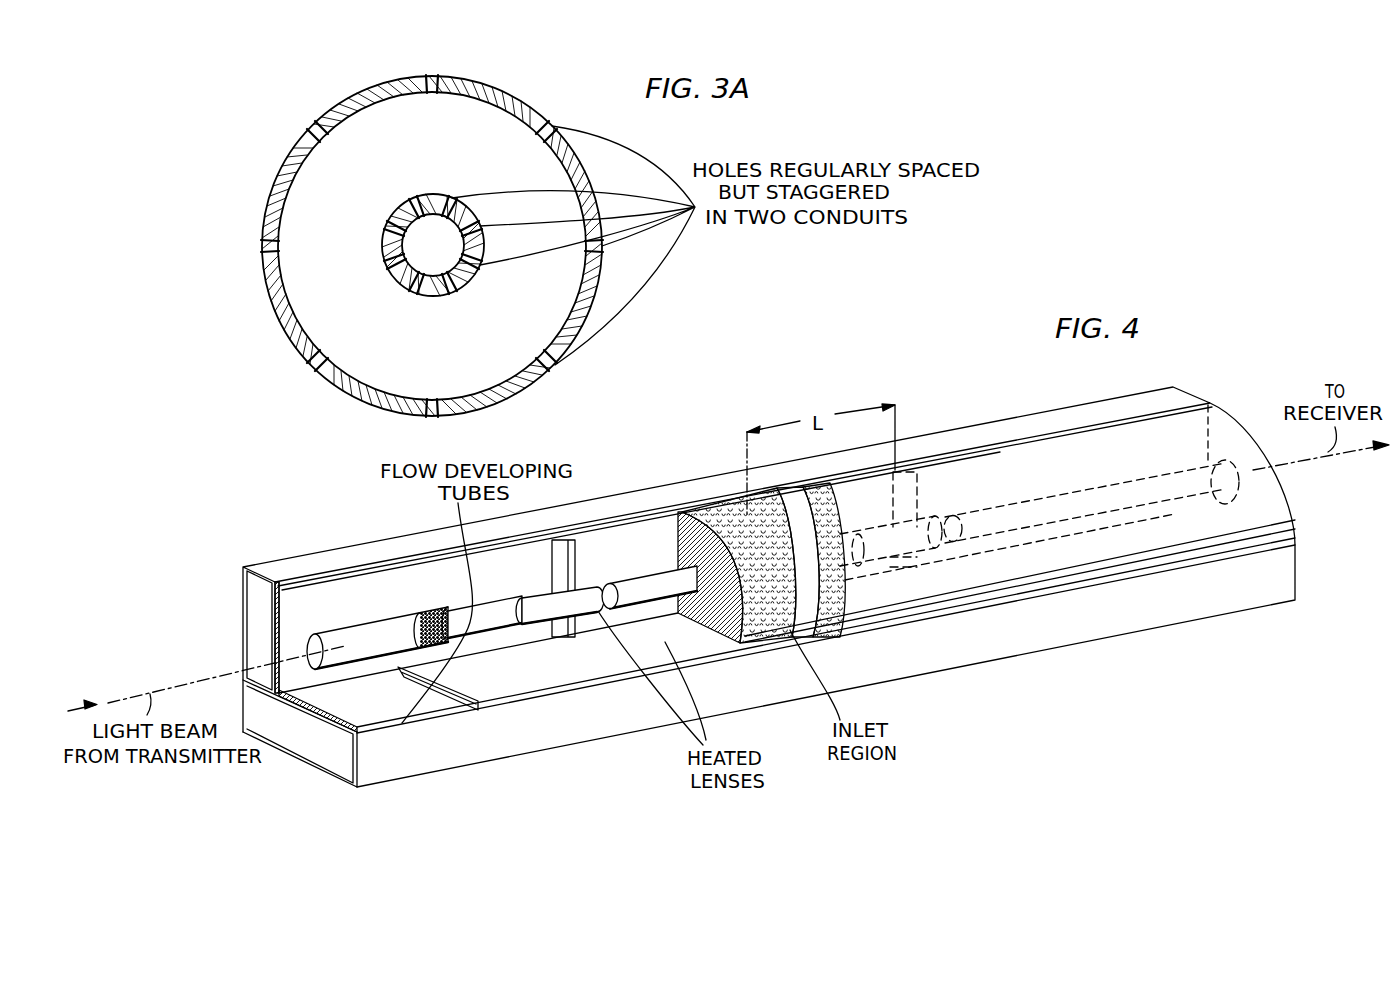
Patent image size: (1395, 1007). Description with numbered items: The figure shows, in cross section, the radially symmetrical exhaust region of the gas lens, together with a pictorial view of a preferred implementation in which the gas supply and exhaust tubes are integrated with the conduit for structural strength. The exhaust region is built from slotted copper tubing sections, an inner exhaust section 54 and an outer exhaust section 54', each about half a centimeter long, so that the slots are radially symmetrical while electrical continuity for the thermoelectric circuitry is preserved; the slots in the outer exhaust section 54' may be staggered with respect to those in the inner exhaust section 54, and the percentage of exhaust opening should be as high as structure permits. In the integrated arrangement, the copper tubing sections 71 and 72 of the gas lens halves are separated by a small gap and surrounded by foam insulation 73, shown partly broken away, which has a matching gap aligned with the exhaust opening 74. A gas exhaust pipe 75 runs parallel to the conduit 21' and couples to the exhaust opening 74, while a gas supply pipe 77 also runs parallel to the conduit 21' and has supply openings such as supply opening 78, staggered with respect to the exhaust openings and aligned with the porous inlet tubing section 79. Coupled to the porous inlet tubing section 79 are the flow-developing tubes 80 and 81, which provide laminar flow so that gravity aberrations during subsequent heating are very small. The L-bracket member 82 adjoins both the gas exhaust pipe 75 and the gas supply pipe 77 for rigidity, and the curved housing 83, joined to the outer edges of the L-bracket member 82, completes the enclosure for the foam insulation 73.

In FIG. 3A, the outer exhaust section 54' is at (412, 246).
In FIG. 3A, the inner exhaust section 54 is at (408, 245).
In FIG. 4, the conduit 21' is at (787, 642).
In FIG. 4, the copper tubing section 71 is at (538, 603).
In FIG. 4, the copper tubing section 72 is at (650, 578).
In FIG. 4, the foam insulation 73 is at (742, 500).
In FIG. 4, the exhaust opening 74 is at (562, 552).
In FIG. 4, the gas exhaust pipe 75 is at (252, 603).
In FIG. 4, the gas supply pipe 77 is at (553, 740).
In FIG. 4, the supply opening 78 is at (462, 795).
In FIG. 4, the porous inlet tubing section 79 is at (433, 620).
In FIG. 4, the flow-developing tube 80 is at (380, 633).
In FIG. 4, the flow-developing tube 81 is at (497, 612).
In FIG. 4, the L-bracket member 82 is at (278, 620).
In FIG. 4, the curved housing 83 is at (975, 592).